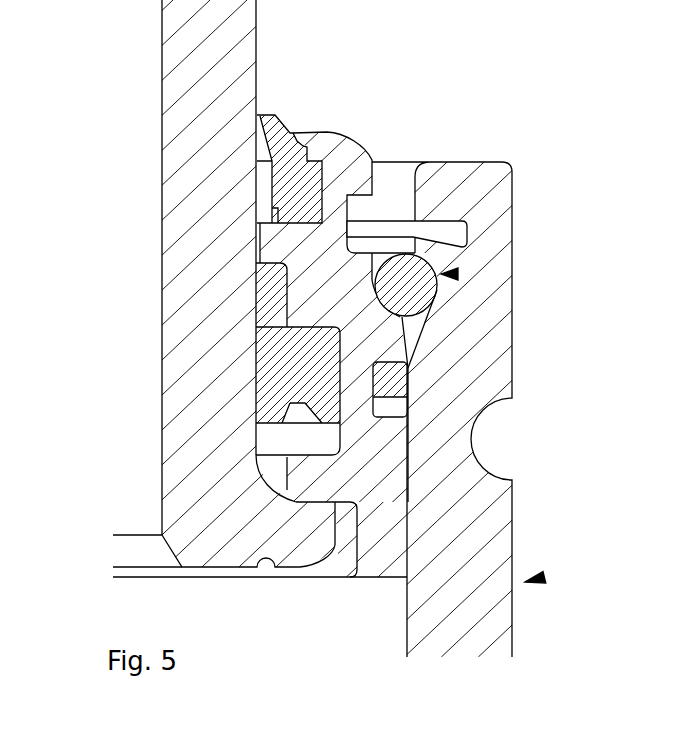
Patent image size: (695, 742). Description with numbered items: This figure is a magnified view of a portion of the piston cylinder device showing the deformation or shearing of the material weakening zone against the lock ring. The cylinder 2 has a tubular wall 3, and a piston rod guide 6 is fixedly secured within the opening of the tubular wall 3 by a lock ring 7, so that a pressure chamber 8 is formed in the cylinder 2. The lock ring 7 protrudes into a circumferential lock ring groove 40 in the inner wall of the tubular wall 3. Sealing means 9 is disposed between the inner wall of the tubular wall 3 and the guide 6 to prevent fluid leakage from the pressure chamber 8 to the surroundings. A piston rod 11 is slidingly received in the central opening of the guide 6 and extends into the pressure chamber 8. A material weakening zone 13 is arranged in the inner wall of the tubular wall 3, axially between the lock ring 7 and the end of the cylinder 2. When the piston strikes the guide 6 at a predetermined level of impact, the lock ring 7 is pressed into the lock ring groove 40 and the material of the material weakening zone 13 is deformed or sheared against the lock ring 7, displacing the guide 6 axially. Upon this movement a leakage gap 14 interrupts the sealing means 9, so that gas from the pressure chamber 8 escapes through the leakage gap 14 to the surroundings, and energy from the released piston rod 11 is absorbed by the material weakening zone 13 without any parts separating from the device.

The cylinder 2 is at (544, 578).
The tubular wall 3 is at (493, 517).
The piston rod guide 6 is at (338, 182).
The lock ring 7 is at (422, 293).
The pressure chamber 8 is at (252, 610).
The sealing means 9 is at (392, 390).
The piston rod 11 is at (213, 132).
The material weakening zone 13 is at (432, 251).
The leakage gap 14 is at (415, 334).
The lock ring groove 40 is at (456, 274).